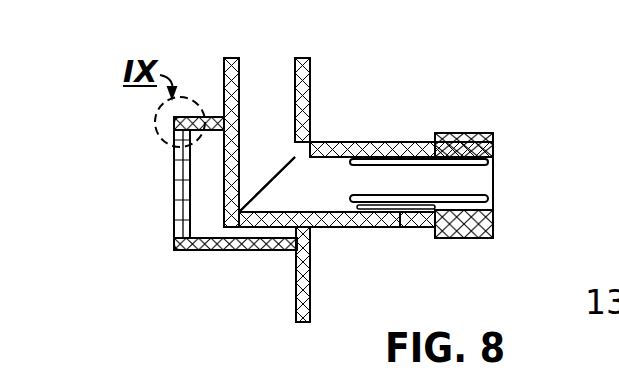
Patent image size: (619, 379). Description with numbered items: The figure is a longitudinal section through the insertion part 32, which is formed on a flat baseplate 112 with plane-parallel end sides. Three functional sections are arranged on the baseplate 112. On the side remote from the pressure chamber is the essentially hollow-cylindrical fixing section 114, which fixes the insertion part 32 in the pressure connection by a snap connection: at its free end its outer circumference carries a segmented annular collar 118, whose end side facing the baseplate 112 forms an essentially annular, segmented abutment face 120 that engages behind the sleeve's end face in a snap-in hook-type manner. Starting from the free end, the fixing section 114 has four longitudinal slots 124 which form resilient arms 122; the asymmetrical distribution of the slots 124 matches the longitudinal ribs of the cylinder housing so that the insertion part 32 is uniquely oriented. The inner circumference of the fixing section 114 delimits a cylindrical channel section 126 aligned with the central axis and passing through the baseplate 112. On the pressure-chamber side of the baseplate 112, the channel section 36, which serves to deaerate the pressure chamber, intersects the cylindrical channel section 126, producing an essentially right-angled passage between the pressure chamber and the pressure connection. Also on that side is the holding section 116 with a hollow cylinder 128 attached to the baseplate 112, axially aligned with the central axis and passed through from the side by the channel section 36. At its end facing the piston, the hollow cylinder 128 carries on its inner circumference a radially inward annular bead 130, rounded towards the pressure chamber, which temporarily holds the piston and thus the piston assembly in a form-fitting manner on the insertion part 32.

The insertion part 32 is at (346, 107).
The channel section 36 is at (262, 75).
The baseplate 112 is at (294, 311).
The fixing section 114 is at (402, 136).
The holding section 116 is at (190, 255).
The segmented annular collar 118 is at (460, 244).
The abutment face 120 is at (420, 229).
The resilient arms 122 is at (460, 183).
The slots 124 is at (403, 168).
The cylindrical channel section 126 is at (330, 218).
The hollow cylinder 128 is at (227, 250).
The annular bead 130 is at (178, 190).